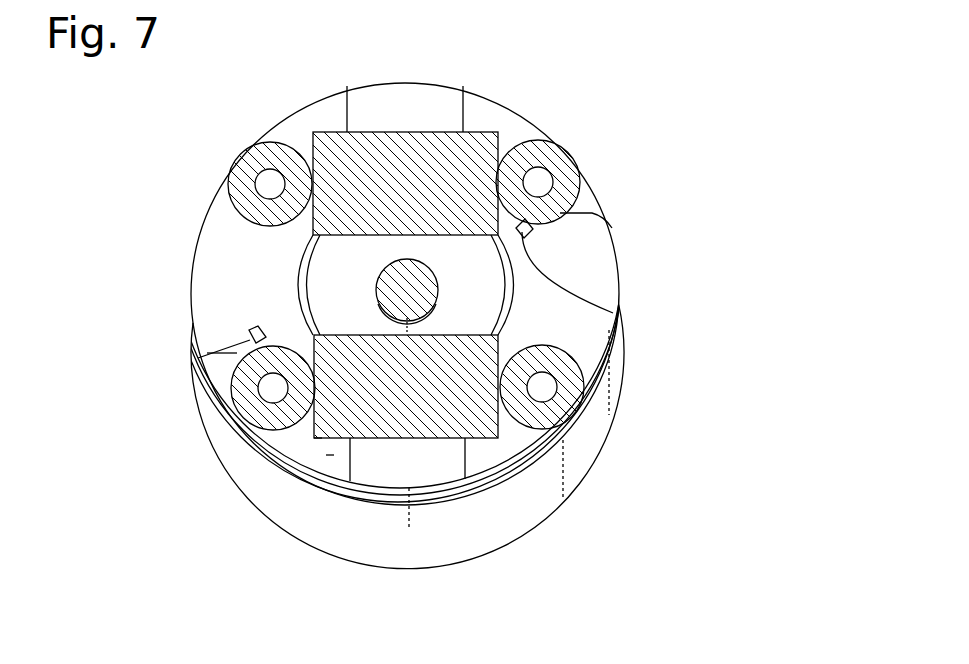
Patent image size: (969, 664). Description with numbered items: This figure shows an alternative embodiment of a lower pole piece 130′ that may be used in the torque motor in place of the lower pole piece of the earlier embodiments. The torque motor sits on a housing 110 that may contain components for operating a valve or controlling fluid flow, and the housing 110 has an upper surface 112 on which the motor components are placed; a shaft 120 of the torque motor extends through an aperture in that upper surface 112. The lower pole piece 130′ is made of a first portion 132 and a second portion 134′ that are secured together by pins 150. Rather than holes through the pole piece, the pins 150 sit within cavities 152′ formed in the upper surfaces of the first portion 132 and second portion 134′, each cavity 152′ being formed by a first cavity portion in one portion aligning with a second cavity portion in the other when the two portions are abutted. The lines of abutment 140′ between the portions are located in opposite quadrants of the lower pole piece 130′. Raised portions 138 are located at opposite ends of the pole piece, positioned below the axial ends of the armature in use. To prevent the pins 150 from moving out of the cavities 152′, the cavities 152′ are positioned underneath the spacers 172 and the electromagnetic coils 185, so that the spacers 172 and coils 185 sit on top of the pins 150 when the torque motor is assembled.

The housing 110 is at (548, 492).
The upper surface 112 is at (327, 292).
The shaft 120 is at (395, 280).
The lower pole piece 130′ is at (660, 148).
The first portion 132 is at (485, 117).
The second portion 134′ is at (328, 457).
The raised portions 138 is at (408, 113).
The lines of abutment 140′ is at (590, 215).
The pins 150 is at (523, 222).
The cavities 152′ is at (545, 270).
The spacers 172 is at (268, 155).
The electromagnetic coils 185 is at (318, 440).